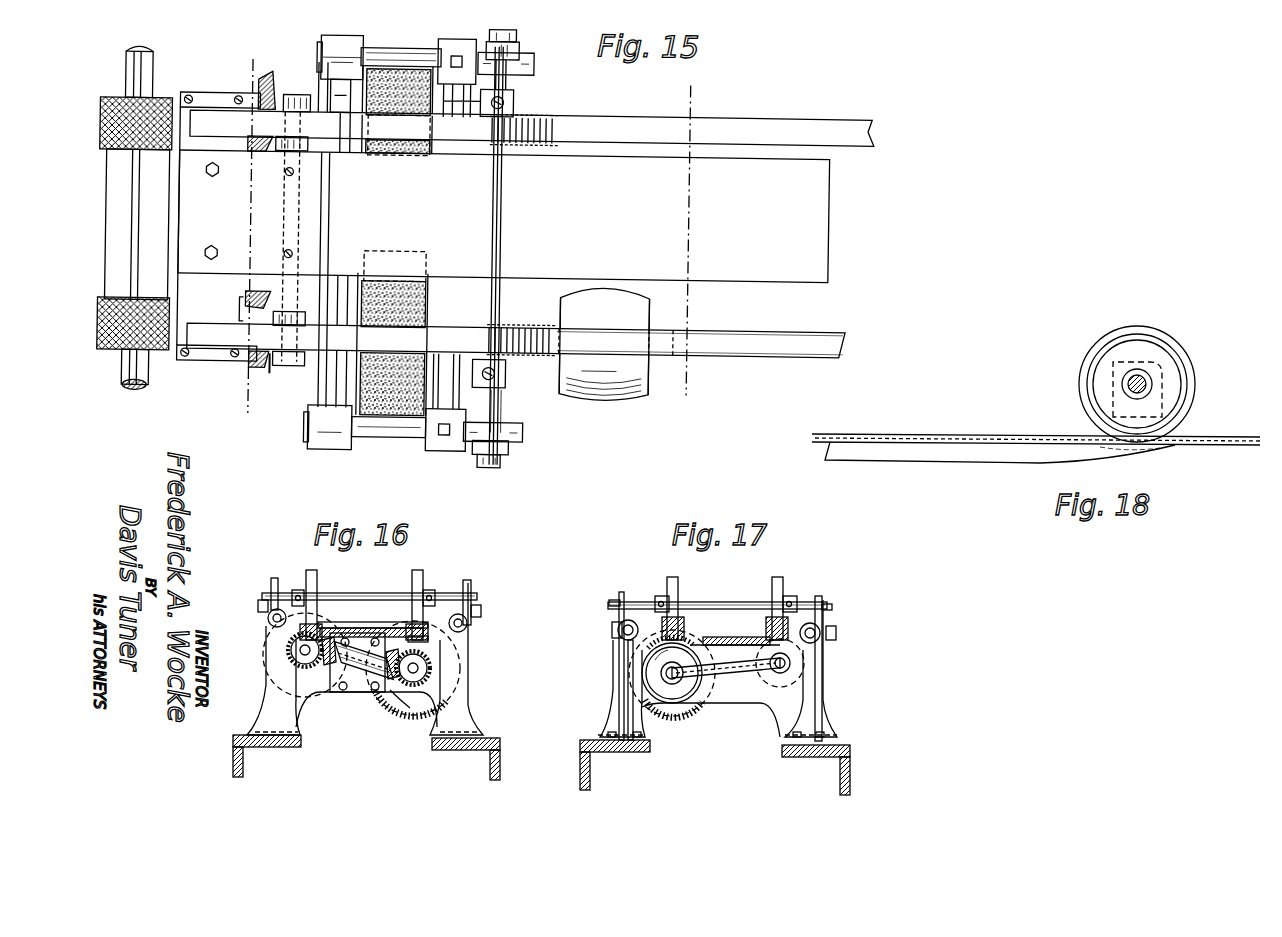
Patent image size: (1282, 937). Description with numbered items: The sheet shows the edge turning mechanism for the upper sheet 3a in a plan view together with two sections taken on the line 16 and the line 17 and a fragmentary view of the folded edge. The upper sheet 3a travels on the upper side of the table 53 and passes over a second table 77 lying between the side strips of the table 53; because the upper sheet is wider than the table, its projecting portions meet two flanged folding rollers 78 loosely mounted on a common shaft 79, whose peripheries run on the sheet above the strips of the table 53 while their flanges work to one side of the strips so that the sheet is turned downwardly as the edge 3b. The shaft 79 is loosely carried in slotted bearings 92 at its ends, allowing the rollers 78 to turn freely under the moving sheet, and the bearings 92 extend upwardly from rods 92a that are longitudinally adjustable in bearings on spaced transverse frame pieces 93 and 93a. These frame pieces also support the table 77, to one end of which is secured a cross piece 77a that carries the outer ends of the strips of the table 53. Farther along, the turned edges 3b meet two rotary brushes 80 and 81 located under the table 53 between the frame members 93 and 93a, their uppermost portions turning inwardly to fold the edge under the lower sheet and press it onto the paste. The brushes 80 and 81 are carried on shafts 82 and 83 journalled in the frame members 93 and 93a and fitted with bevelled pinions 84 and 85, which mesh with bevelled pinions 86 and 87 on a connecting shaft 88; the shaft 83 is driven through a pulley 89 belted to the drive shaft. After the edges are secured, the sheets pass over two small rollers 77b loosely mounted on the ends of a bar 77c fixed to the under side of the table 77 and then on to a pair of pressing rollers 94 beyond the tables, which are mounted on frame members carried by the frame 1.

In FIG. 16, the frame 1 is at (486, 750).
In FIG. 17, the frame 1 is at (614, 752).
In FIG. 18, the upper sheet 3a is at (1016, 418).
In FIG. 18, the downwardly turned edge 3b is at (1060, 455).
In FIG. 15, the section line 16- 16 is at (243, 230).
In FIG. 15, the section line 17- 17 is at (682, 239).
In FIG. 15, the table 53 is at (836, 100).
In FIG. 18, the table 53 is at (980, 444).
In FIG. 15, the second table 77 is at (831, 244).
In FIG. 16, the second table 77 is at (325, 622).
In FIG. 17, the second table 77 is at (748, 640).
In FIG. 15, the cross piece 77a is at (225, 310).
In FIG. 15, the small rollers 77b is at (310, 150).
In FIG. 16, the small rollers 77b is at (430, 640).
In FIG. 15, the bar 77c is at (304, 218).
In FIG. 16, the bar 77c is at (382, 610).
In FIG. 15, the flanged rollers 78 is at (540, 110).
In FIG. 16, the flanged rollers 78 is at (310, 572).
In FIG. 17, the flanged rollers 78 is at (678, 590).
In FIG. 18, the flanged rollers 78 is at (1170, 352).
In FIG. 15, the shaft 79 is at (505, 206).
In FIG. 16, the shaft 79 is at (372, 592).
In FIG. 17, the shaft 79 is at (736, 594).
In FIG. 18, the shaft 79 is at (1150, 385).
In FIG. 15, the rotary brush 80 is at (400, 68).
In FIG. 16, the rotary brush 80 is at (286, 632).
In FIG. 17, the rotary brush 80 is at (780, 690).
In FIG. 15, the rotary brush 81 is at (405, 412).
In FIG. 16, the rotary brush 81 is at (450, 650).
In FIG. 17, the rotary brush 81 is at (695, 712).
In FIG. 16, the shaft 82 is at (290, 652).
In FIG. 17, the shaft 82 is at (790, 665).
In FIG. 15, the shaft 83 is at (678, 333).
In FIG. 16, the shaft 83 is at (430, 670).
In FIG. 17, the shaft 83 is at (668, 676).
In FIG. 15, the bevelled pinion 84 is at (272, 80).
In FIG. 16, the bevelled pinion 84 is at (298, 672).
In FIG. 15, the bevelled pinion 85 is at (270, 365).
In FIG. 16, the bevelled pinion 85 is at (430, 738).
In FIG. 15, the bevelled pinion 86 is at (256, 150).
In FIG. 16, the bevelled pinion 86 is at (334, 686).
In FIG. 15, the bevelled pinion 87 is at (250, 296).
In FIG. 16, the bevelled pinion 87 is at (400, 690).
In FIG. 16, the connecting shaft 88 is at (372, 680).
In FIG. 15, the pulley 89 is at (610, 392).
In FIG. 17, the pulley 89 is at (650, 680).
In FIG. 15, the slotted bearings 92 is at (516, 38).
In FIG. 16, the slotted bearings 92 is at (272, 580).
In FIG. 17, the slotted bearings 92 is at (620, 594).
In FIG. 18, the slotted bearings 92 is at (1128, 365).
In FIG. 15, the rods 92a is at (534, 60).
In FIG. 16, the rods 92a is at (268, 615).
In FIG. 17, the rods 92a is at (618, 636).
In FIG. 15, the transverse frame piece 93 is at (320, 400).
In FIG. 16, the transverse frame piece 93 is at (468, 704).
In FIG. 15, the transverse frame piece 93a is at (465, 450).
In FIG. 17, the transverse frame piece 93a is at (822, 712).
In FIG. 15, the pressing rollers 94 is at (141, 380).